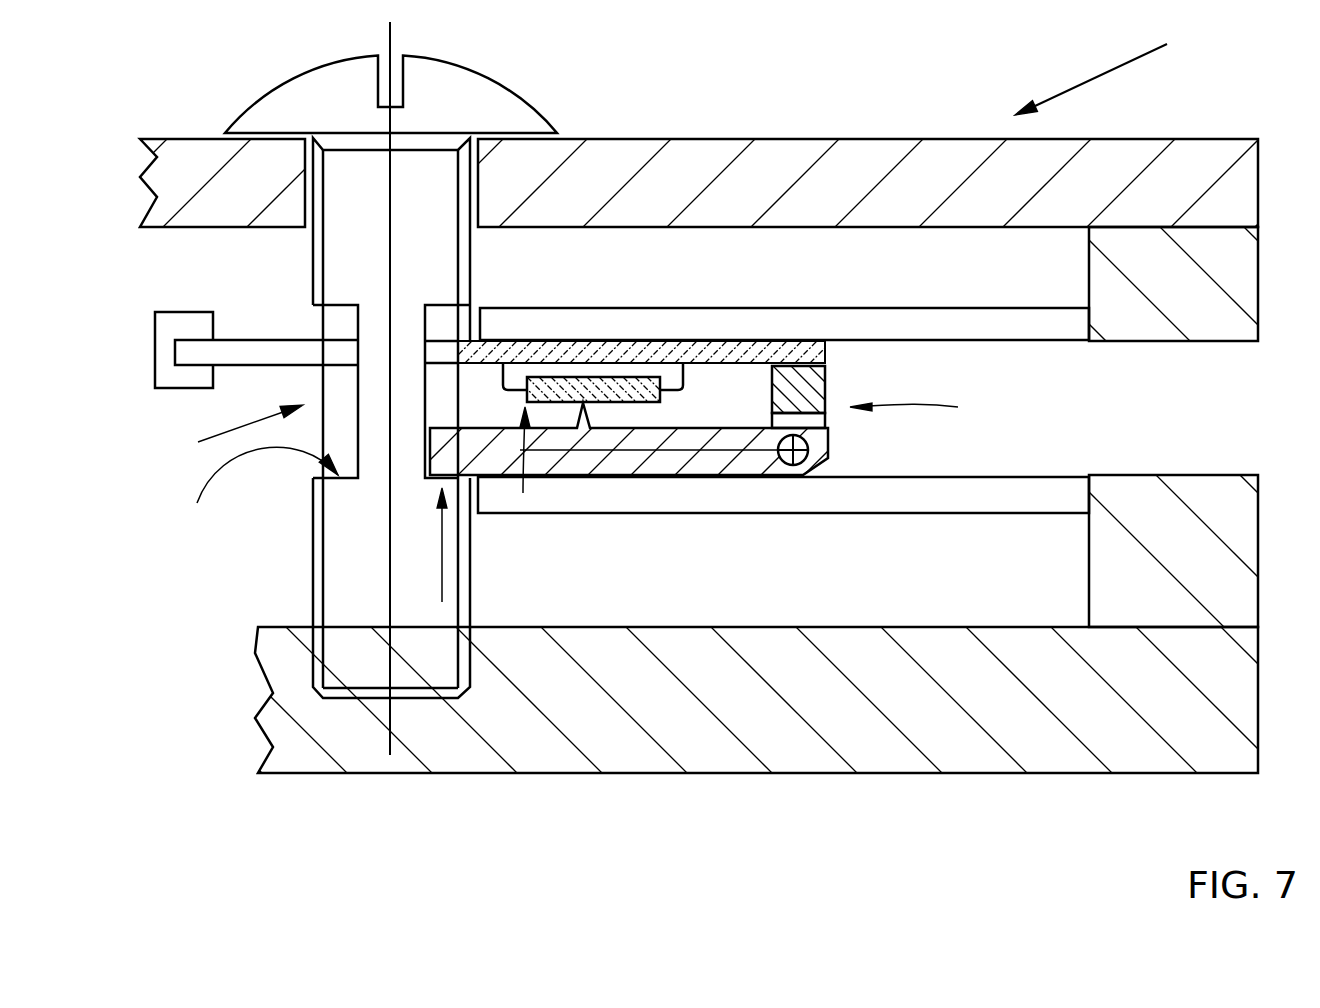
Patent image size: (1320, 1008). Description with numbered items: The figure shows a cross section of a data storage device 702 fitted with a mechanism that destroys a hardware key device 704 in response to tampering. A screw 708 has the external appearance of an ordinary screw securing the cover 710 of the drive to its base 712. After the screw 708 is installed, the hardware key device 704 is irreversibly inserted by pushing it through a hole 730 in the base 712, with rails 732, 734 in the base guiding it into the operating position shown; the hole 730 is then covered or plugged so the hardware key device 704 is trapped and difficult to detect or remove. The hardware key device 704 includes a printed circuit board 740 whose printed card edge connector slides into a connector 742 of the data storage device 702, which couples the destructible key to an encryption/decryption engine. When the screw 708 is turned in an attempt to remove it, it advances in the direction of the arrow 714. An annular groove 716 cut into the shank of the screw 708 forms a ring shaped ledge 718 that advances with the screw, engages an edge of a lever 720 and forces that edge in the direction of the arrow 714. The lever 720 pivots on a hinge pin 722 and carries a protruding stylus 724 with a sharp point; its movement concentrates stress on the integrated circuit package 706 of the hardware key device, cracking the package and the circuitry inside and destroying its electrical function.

The data storage device 702 is at (1121, 73).
The hardware key device 704 is at (874, 397).
The integrated circuit package 706 is at (602, 377).
The screw 708 is at (477, 70).
The cover 710 is at (770, 139).
The base 712 is at (822, 775).
The arrow 714 is at (442, 578).
The annular groove 716 is at (226, 431).
The ring shaped ledge 718 is at (245, 484).
The lever 720 is at (502, 428).
The hinge pin 722 is at (810, 447).
The stylus 724 is at (590, 412).
The hole 730 is at (1194, 423).
The rail 732 is at (965, 308).
The lower guide rail 734 is at (983, 513).
The printed circuit board 740 is at (303, 340).
The connector 742 is at (185, 312).